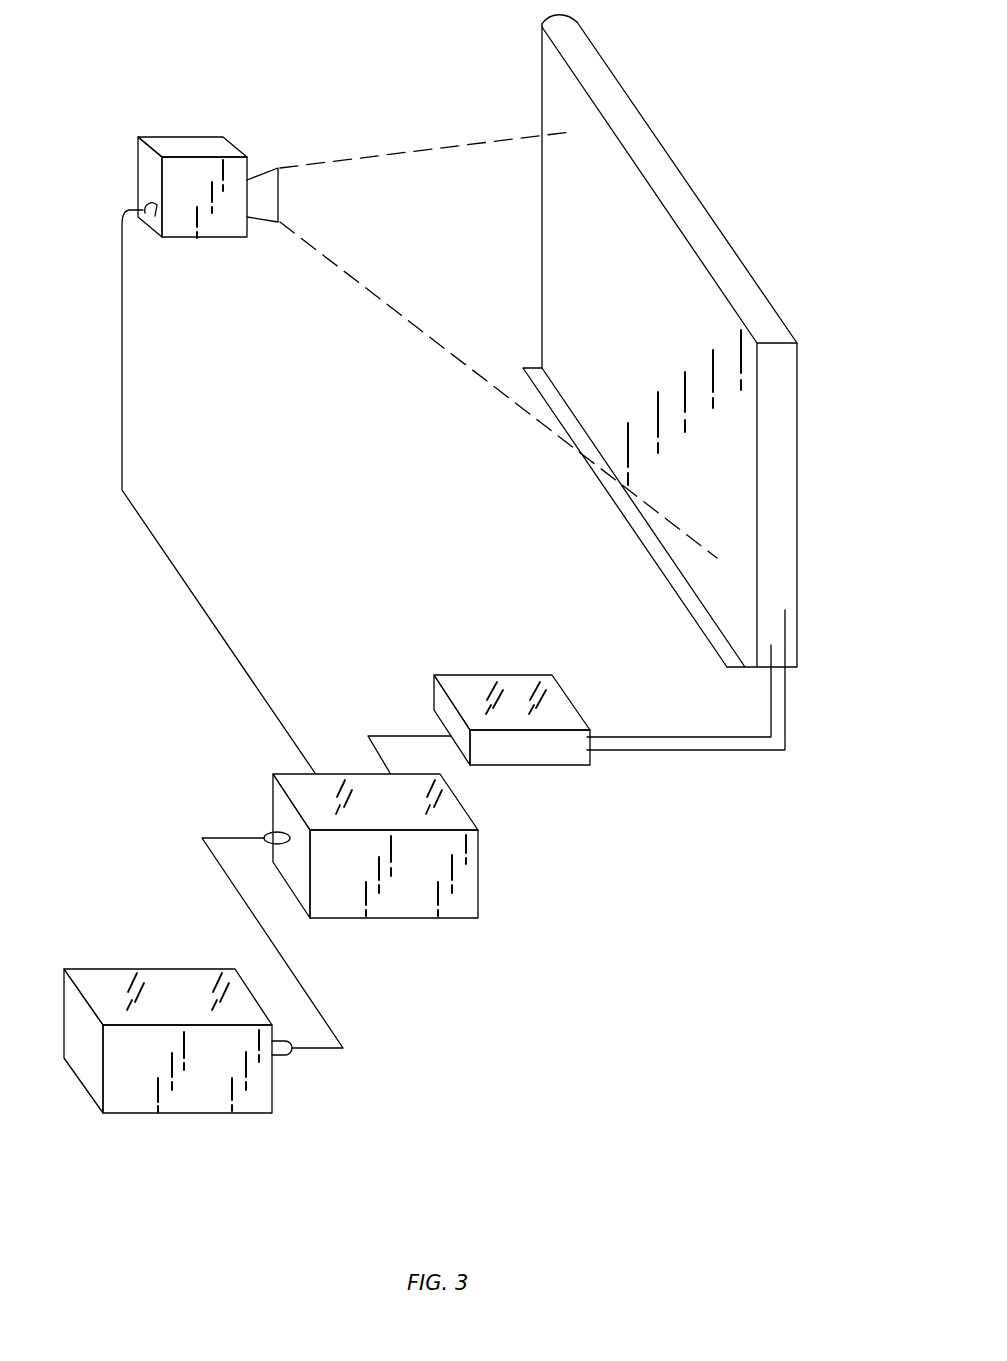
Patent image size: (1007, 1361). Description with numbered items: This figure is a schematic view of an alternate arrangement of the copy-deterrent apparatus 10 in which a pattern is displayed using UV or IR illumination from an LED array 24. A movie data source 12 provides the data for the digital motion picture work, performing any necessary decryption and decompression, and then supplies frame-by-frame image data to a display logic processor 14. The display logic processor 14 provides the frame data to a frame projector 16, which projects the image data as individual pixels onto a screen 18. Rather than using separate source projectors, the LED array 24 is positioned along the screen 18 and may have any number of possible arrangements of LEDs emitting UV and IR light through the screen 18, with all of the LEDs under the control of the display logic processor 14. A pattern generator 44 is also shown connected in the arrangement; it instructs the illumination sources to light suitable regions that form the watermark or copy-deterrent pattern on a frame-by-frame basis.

The copy-deterrent apparatus 10 is at (352, 84).
The movie data source 12 is at (189, 1113).
The display logic processor 14 is at (397, 918).
The frame projector 16 is at (138, 180).
The screen 18 is at (688, 181).
The LED array 24 is at (790, 390).
The pattern generator 44 is at (585, 696).